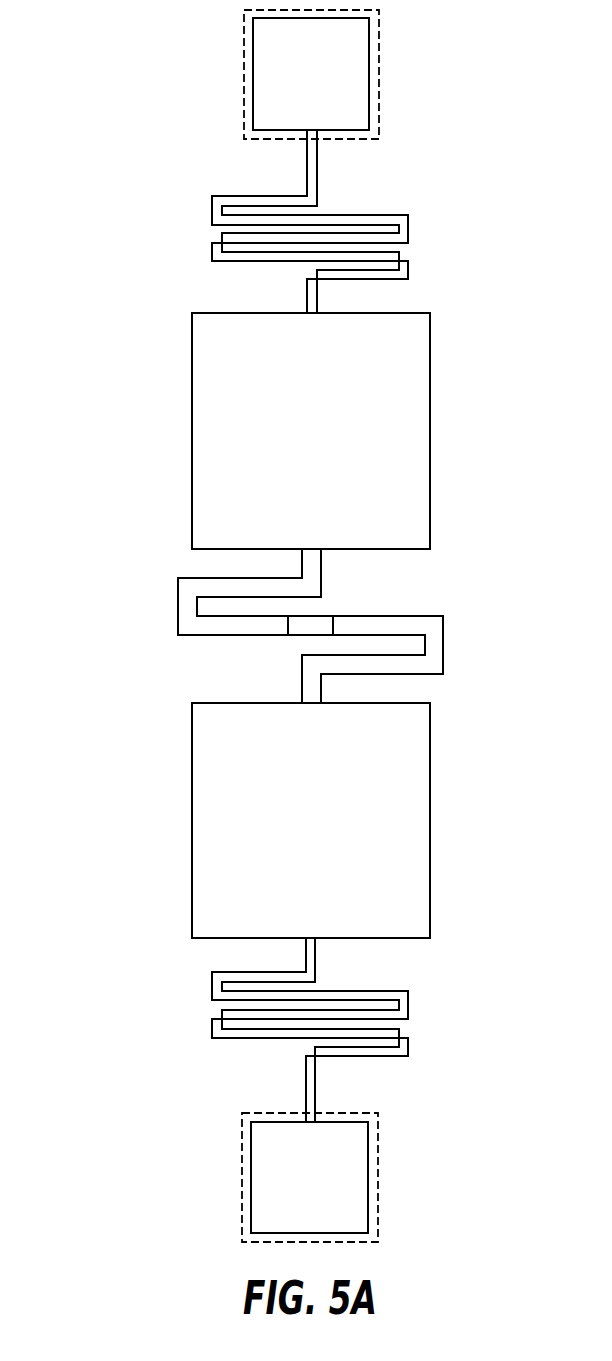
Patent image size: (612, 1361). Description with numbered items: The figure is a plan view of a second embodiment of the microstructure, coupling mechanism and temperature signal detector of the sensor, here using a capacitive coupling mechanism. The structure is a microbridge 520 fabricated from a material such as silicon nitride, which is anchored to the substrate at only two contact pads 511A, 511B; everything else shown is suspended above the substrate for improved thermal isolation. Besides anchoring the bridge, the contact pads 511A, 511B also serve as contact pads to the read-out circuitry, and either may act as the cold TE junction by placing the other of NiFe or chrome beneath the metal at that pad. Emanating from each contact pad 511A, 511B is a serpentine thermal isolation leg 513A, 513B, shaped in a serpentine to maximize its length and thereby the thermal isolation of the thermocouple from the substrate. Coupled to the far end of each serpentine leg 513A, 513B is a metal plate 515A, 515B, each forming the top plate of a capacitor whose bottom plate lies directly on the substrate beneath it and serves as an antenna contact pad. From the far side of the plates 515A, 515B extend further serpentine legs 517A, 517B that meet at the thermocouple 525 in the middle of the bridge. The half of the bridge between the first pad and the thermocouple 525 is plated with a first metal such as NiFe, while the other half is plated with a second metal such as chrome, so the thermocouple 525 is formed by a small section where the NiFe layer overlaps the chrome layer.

The microbridge 520 is at (118, 40).
The contact pad 511A is at (380, 73).
The serpentine thermal isolation leg 513A is at (363, 213).
The metal plate 515A is at (431, 432).
The serpentine leg 517A is at (322, 570).
The thermocouple 525 is at (298, 637).
The serpentine leg 517B is at (444, 645).
The metal plate 515B is at (431, 822).
The serpentine thermal isolation leg 513B is at (362, 991).
The contact pad 511B is at (379, 1177).